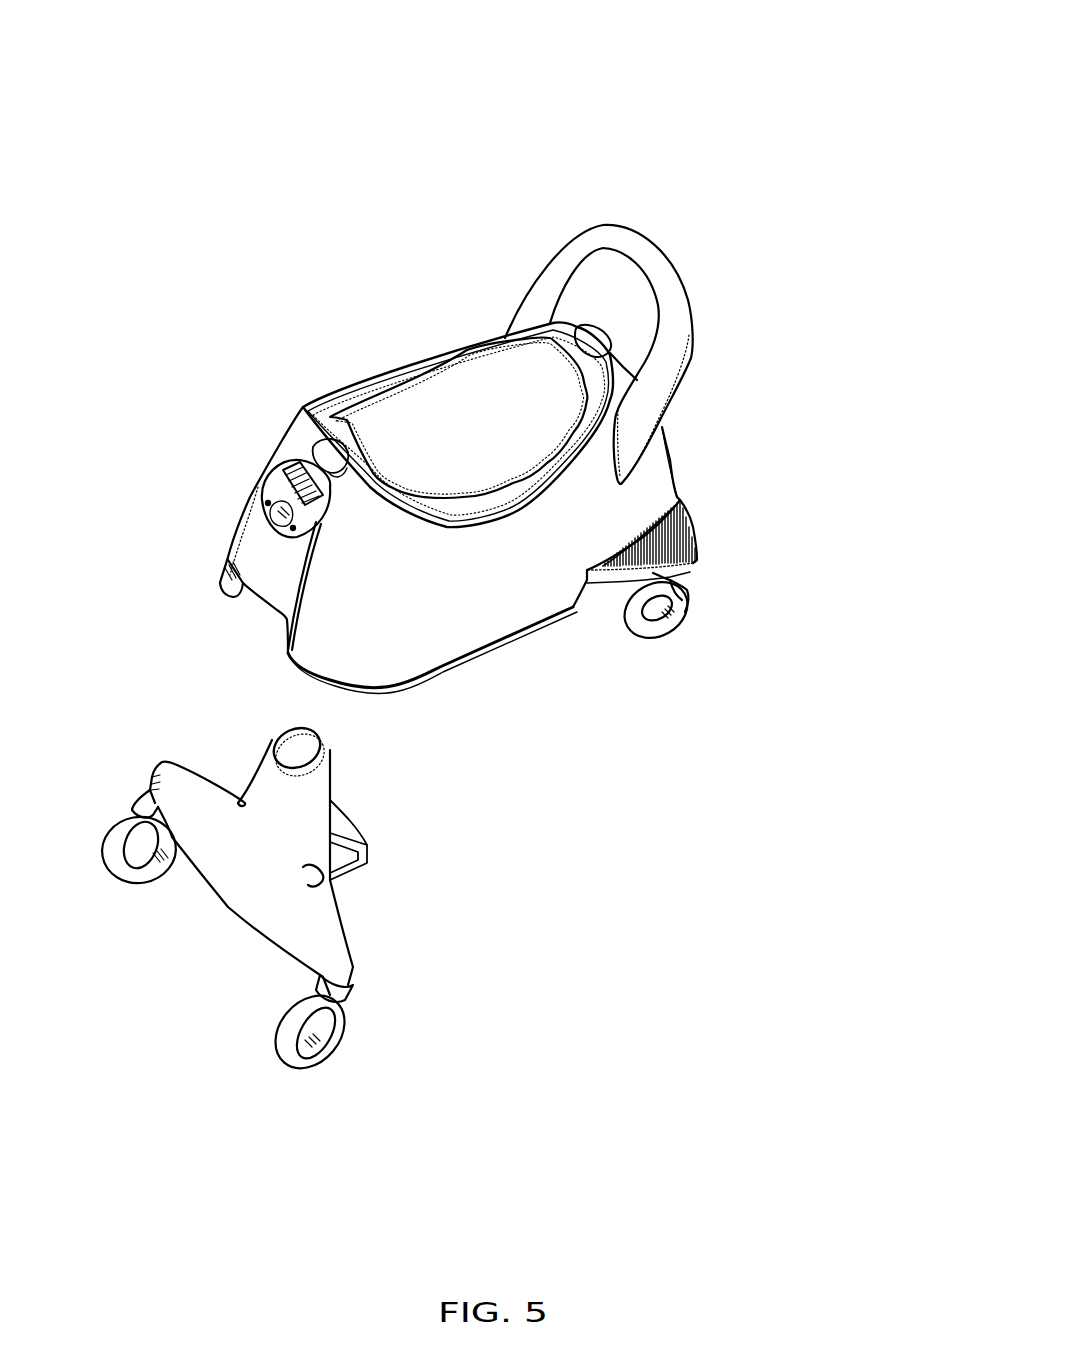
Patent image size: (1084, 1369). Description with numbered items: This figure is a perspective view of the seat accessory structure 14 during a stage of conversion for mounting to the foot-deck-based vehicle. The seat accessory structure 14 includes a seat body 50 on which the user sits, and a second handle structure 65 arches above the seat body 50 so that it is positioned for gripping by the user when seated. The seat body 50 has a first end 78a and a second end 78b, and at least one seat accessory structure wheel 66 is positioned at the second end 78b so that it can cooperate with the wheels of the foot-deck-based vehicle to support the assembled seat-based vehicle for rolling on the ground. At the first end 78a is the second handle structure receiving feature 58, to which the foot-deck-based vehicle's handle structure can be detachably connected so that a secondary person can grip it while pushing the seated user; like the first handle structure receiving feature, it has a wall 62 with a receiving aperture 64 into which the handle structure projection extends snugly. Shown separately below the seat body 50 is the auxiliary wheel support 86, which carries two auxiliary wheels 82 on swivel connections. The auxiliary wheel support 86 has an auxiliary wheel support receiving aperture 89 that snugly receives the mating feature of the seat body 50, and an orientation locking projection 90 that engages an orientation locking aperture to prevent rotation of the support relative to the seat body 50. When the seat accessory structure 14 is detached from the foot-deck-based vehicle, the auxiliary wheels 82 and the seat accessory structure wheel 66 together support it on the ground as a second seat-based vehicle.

The seat accessory structure 14 is at (456, 300).
The second handle structure 65 is at (657, 250).
The second handle structure receiving feature 58 is at (292, 463).
The receiving aperture 64 is at (308, 458).
The second end 78b is at (668, 468).
The first end 78a is at (237, 551).
The seat accessory structure wheel 66 is at (667, 610).
The seat body 50 is at (458, 612).
The wall 62 is at (298, 533).
The auxiliary wheel support receiving aperture 89 is at (287, 727).
The auxiliary wheel support 86 is at (303, 943).
The orientation locking projection 90 is at (367, 845).
The auxiliary wheel 82 is at (135, 850).